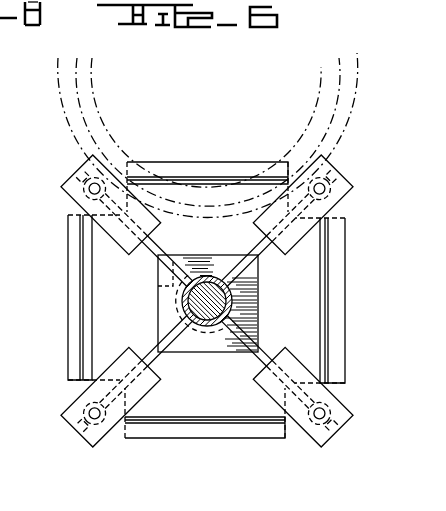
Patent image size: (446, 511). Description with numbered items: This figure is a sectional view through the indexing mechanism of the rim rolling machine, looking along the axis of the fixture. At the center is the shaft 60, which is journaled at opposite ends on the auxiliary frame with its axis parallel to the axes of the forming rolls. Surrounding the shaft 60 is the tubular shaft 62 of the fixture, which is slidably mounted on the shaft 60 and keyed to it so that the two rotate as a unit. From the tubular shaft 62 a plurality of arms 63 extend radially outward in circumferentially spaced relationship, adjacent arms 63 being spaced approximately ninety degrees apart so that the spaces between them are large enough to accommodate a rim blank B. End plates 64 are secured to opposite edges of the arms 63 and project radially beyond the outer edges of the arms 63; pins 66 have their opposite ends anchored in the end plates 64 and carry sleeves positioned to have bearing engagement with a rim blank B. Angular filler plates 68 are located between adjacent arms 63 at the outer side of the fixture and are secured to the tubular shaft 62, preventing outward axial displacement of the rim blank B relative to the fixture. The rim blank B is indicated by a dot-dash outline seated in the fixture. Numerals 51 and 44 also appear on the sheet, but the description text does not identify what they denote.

The shaft 60 is at (211, 300).
The tubular shaft 62 is at (243, 312).
The arms 63 is at (161, 252).
The end plates 64 is at (72, 197).
The pins 66 is at (100, 180).
The angular filler plates 68 is at (248, 182).
The rim blank B is at (353, 91).
The adjacent figure element (partial) 51 is at (33, 27).
The adjacent element (partial) 44 is at (6, 195).